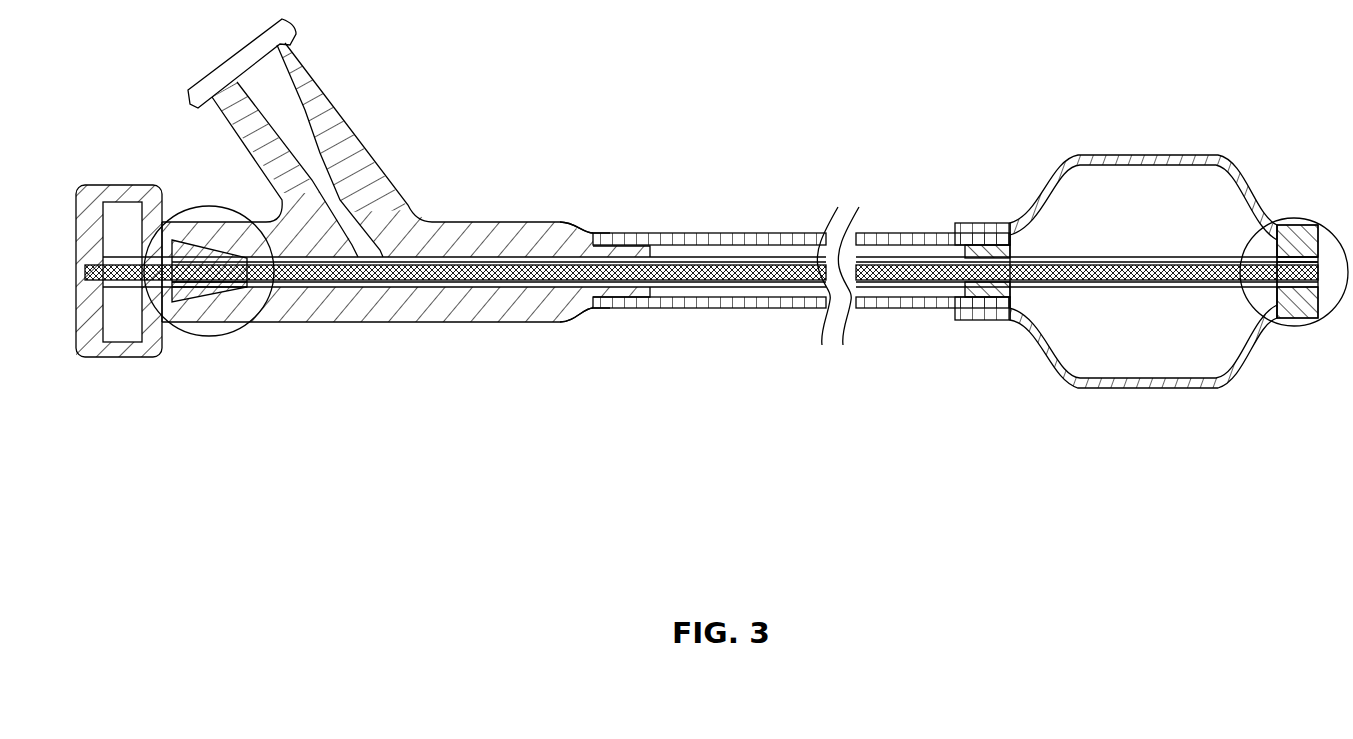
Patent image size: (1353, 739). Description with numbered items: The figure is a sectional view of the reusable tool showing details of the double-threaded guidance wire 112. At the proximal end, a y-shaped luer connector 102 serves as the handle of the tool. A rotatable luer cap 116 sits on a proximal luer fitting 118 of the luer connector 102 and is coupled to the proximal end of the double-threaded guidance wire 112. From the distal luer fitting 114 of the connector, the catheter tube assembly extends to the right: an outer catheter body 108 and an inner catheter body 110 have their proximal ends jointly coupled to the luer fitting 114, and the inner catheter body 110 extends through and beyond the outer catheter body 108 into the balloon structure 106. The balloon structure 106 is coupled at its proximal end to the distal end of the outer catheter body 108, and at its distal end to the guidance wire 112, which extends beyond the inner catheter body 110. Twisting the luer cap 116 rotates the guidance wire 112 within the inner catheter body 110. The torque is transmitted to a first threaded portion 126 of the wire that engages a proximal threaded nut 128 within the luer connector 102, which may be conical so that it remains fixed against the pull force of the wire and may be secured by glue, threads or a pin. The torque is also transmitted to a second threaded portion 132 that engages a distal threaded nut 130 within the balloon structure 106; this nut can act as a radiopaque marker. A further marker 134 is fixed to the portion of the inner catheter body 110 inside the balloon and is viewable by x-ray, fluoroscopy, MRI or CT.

The y-shaped luer connector 102 is at (316, 104).
The balloon structure 106 is at (1033, 352).
The outer catheter body 108 is at (675, 237).
The inner catheter body 110 is at (1226, 257).
The double-threaded guidance wire 112 is at (463, 279).
The luer fitting 114 is at (598, 238).
The rotatable luer cap 116 is at (93, 188).
The proximal luer fitting 118 is at (158, 216).
The first threaded portion 126 is at (238, 258).
The proximal threaded nut 128 is at (200, 290).
The distal threaded nut 130 is at (1298, 307).
The second threaded portion 132 is at (1294, 257).
The marker 134 is at (999, 250).